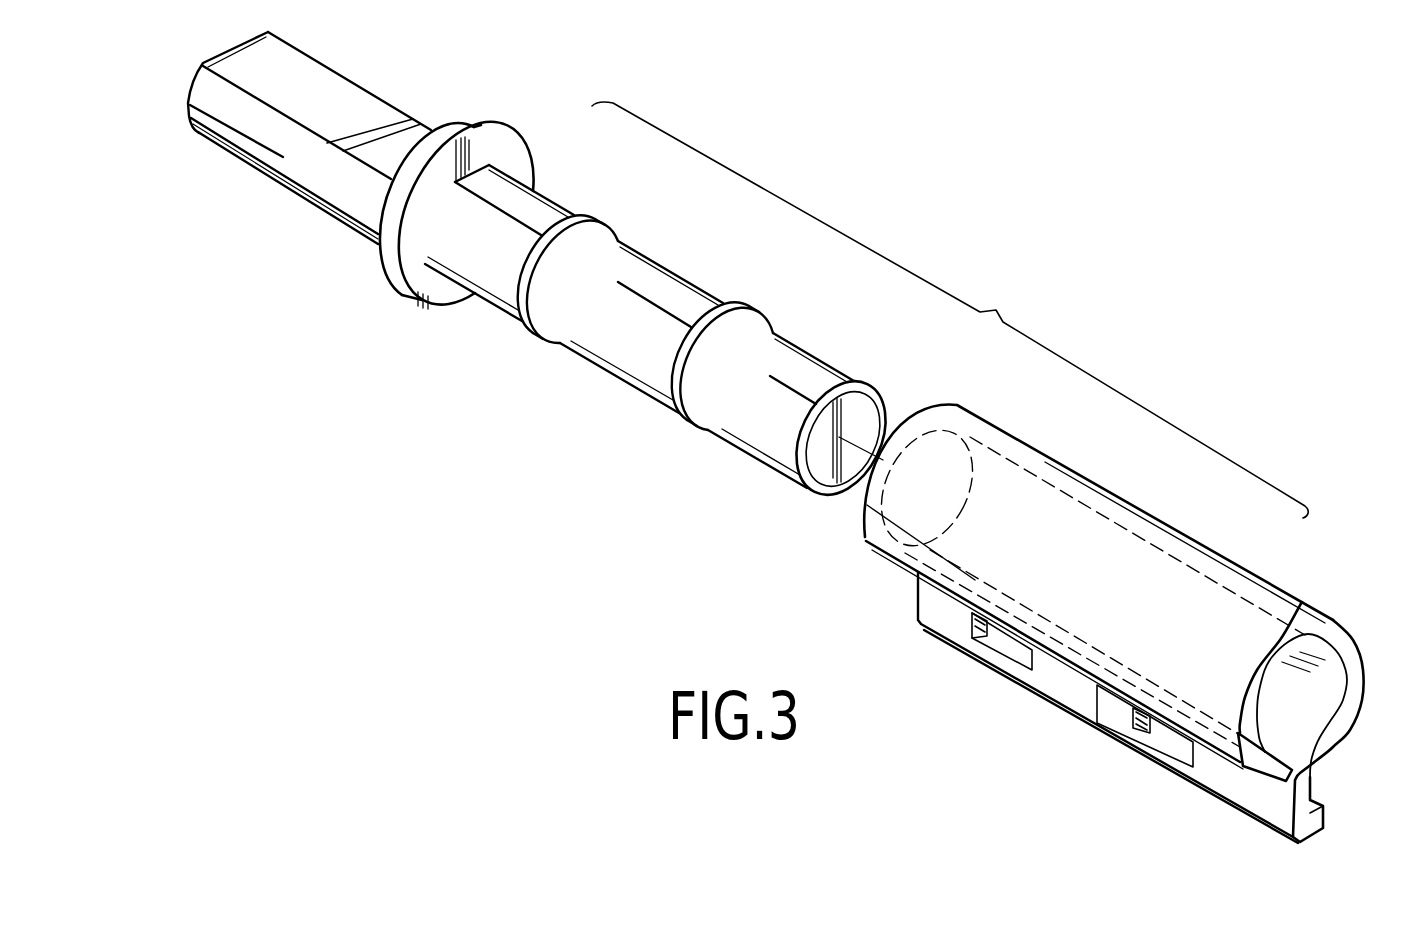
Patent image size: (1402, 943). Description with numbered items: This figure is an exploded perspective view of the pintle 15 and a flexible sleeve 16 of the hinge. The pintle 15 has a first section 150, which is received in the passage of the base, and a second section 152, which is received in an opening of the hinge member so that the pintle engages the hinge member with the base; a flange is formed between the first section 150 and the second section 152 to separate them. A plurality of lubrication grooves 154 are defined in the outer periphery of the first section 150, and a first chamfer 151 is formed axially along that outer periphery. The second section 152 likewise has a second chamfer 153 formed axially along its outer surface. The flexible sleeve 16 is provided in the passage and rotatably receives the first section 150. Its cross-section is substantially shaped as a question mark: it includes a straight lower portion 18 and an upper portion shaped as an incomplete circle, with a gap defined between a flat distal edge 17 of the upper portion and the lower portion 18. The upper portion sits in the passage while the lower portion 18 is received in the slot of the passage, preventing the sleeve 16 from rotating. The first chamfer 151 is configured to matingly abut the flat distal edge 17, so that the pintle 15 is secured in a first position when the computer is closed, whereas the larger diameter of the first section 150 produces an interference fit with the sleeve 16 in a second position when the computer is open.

The pintle 15 is at (491, 102).
The first section 150 is at (583, 358).
The first chamfer 151 is at (835, 367).
The second section 152 is at (362, 226).
The second chamfer 153 is at (352, 84).
The lubrication grooves 154 is at (690, 418).
The flexible sleeve 16 is at (1033, 450).
The flat distal edge 17 is at (1265, 770).
The straight lower portion 18 is at (943, 637).